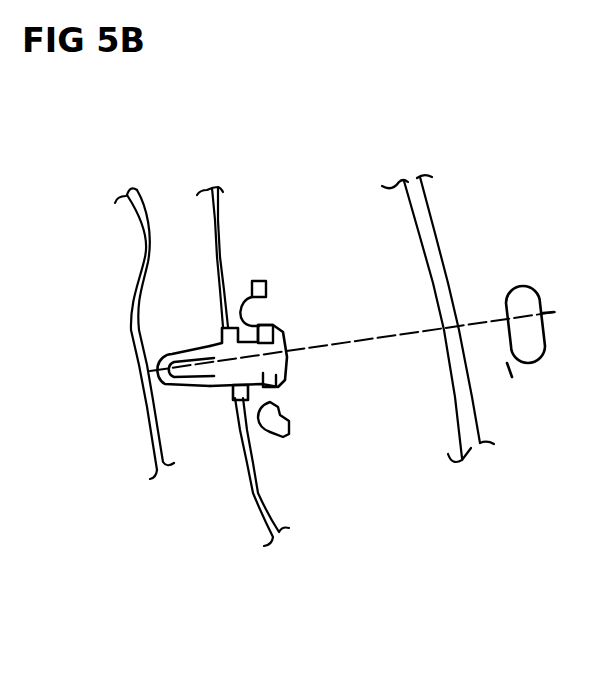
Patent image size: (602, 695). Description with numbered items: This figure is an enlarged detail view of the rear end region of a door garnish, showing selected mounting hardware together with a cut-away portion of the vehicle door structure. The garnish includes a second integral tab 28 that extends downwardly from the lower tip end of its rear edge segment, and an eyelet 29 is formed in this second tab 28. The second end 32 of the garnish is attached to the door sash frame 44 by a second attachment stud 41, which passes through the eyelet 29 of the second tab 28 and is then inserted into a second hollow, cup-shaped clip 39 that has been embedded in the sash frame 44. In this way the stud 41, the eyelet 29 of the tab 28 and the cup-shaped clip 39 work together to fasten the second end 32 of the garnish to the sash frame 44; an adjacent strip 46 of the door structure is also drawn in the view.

The second integral tab 28 is at (253, 281).
The eyelet 29 is at (285, 393).
The second end of the garnish 32 is at (290, 440).
The second hollow, cup-shaped clip 39 is at (203, 386).
The second attachment stud 41 is at (210, 347).
The door sash frame 44 is at (212, 218).
The support strip 46 is at (422, 217).